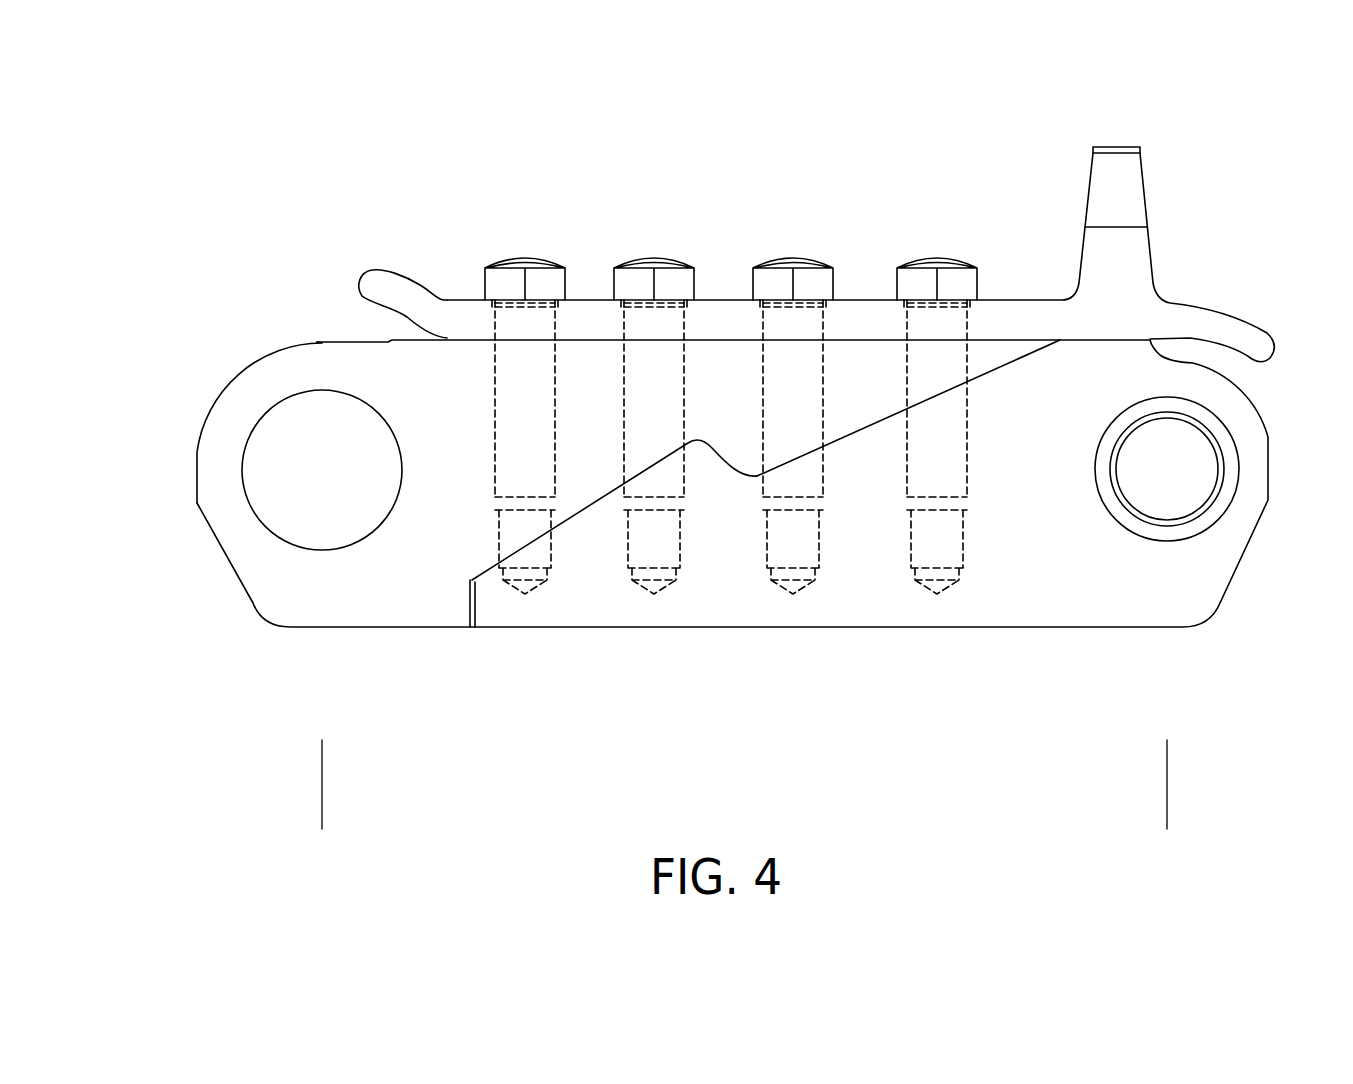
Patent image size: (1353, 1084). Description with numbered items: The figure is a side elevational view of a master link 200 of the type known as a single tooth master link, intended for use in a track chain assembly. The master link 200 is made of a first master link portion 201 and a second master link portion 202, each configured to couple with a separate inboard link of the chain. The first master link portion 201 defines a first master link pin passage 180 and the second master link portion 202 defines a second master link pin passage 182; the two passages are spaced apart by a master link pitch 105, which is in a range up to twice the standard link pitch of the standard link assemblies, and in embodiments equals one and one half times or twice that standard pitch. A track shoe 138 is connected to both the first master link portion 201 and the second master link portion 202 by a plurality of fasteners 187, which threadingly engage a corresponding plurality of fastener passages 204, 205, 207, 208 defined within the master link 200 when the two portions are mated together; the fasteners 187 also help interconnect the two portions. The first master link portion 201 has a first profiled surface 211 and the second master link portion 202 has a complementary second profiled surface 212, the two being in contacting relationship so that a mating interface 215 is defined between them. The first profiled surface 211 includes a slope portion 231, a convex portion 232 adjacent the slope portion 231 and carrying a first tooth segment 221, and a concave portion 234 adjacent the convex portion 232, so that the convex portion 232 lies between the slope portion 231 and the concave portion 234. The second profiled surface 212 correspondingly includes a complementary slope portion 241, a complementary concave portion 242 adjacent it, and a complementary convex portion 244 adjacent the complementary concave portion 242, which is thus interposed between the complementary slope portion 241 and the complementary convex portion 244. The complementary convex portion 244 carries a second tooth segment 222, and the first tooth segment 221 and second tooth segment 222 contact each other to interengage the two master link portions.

The master link 200 is at (215, 228).
The first master link portion 201 is at (290, 375).
The second master link portion 202 is at (1183, 573).
The first master link pin passage 180 is at (375, 412).
The second master link pin passage 182 is at (1233, 490).
The track shoe 138 is at (482, 318).
The fasteners 187 is at (535, 253).
The fastener passage 204 is at (495, 477).
The fastener passage 205 is at (626, 471).
The fastener passage 207 is at (824, 478).
The fastener passage 208 is at (966, 478).
The first profiled surface 211 is at (576, 527).
The second profiled surface 212 is at (826, 431).
The mating interface 215 is at (755, 474).
The first tooth segment 221 is at (723, 440).
The second tooth segment 222 is at (707, 442).
The slope portion 231 is at (888, 417).
The convex portion 232 is at (757, 477).
The concave portion 234 is at (693, 440).
The complementary slope portion 241 is at (937, 395).
The complementary concave portion 242 is at (757, 478).
The complementary convex portion 244 is at (697, 442).
The master link pitch 105 is at (1153, 804).